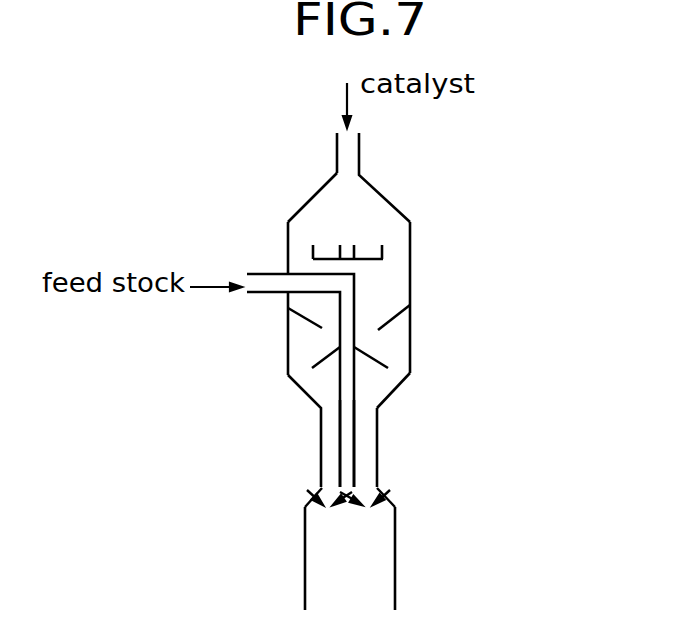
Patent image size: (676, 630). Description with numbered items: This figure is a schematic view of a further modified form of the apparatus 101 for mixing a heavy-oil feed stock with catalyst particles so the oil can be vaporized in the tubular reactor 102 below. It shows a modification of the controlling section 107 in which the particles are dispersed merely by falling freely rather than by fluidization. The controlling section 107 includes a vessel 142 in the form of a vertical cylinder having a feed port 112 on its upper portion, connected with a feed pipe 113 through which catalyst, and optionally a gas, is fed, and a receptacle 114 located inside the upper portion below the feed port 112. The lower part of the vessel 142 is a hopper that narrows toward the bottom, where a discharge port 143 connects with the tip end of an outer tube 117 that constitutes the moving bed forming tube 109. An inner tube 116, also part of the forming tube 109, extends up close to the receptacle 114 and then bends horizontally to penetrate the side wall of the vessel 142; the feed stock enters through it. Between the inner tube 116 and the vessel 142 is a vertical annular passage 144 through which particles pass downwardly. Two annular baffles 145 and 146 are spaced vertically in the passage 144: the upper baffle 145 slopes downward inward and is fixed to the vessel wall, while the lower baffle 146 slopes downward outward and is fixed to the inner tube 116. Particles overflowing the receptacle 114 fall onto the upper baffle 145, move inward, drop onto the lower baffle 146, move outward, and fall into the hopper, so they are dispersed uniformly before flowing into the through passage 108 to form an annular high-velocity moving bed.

The apparatus 101 is at (446, 209).
The tubular reactor 102 is at (395, 563).
The controlling section 107 is at (418, 287).
The through passage 108 is at (370, 475).
The forming tube 109 is at (315, 467).
The feed port 112 is at (350, 175).
The feed pipe 113 is at (360, 150).
The receptacle 114 is at (383, 253).
The inner tube 116 is at (339, 430).
The outer tube 117 is at (377, 450).
The vessel 142 is at (319, 191).
The discharge port 143 is at (377, 410).
The annular passage 144 is at (397, 343).
The upper baffle 145 is at (312, 323).
The lower baffle 146 is at (313, 362).